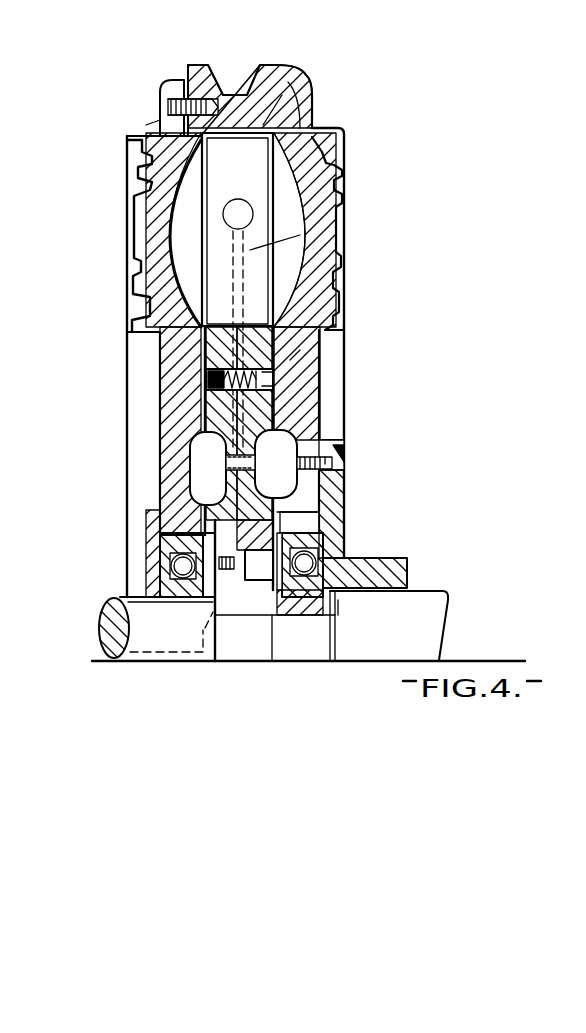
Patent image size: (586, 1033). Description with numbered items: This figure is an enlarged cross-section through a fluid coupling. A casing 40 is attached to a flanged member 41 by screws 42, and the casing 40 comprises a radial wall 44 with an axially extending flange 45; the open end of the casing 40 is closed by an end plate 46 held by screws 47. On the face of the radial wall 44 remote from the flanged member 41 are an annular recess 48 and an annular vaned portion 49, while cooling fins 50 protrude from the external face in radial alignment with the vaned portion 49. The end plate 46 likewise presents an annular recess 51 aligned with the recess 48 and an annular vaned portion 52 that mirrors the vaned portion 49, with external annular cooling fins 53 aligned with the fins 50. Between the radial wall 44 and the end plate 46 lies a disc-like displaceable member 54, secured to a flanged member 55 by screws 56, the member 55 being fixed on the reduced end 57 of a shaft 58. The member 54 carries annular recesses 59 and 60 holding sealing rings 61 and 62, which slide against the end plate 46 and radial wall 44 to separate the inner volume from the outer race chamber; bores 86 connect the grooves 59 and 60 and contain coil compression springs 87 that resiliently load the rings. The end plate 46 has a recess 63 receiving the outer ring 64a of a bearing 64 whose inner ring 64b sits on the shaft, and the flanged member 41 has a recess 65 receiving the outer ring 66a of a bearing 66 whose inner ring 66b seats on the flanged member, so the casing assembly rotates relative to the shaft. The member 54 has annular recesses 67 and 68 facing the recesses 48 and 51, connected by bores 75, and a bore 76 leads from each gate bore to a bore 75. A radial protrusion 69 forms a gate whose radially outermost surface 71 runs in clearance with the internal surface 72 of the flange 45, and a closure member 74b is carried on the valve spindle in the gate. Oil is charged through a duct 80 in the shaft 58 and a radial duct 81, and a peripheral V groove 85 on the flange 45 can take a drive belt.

The casing 40 is at (348, 398).
The flanged member 41 is at (408, 576).
The screws 42 is at (352, 473).
The radial wall 44 is at (298, 403).
The axially extending flange 45 is at (296, 95).
The end plate 46 is at (160, 136).
The screws 47 is at (165, 98).
The annular recess 48 is at (333, 463).
The annular vaned portion 49 is at (344, 205).
The cooling fins 50 is at (344, 180).
The annular recess 51 is at (196, 460).
The annular vaned portion 52 is at (188, 203).
The annular cooling fins 53 is at (128, 170).
The displaceable member 54 is at (220, 345).
The flanged member 55 is at (276, 620).
The screws 56 is at (240, 580).
The reduced end 57 is at (320, 640).
The shaft 58 is at (166, 628).
The annular recess 59 is at (262, 388).
The annular recess 60 is at (318, 356).
The sealing ring 61 is at (258, 390).
The sealing ring 62 is at (318, 373).
The recess 63 is at (175, 530).
The bearing 64 is at (172, 570).
The outer ring 64a is at (165, 554).
The inner ring 64b is at (150, 597).
The recess 65 is at (318, 538).
The bearing 66 is at (383, 578).
The outer ring 66a is at (240, 558).
The inner ring 66b is at (340, 594).
The annular recess 67 is at (284, 448).
The annular recess 68 is at (180, 510).
The radial protrusion (gate) 69 is at (215, 268).
The radially outermost surface 71 is at (300, 120).
The internal surface 72 is at (245, 108).
The closure member 74b is at (222, 215).
The bores 75 is at (238, 458).
The bore 76 is at (300, 251).
The duct 80 is at (128, 652).
The radial duct 81 is at (204, 645).
The V groove 85 is at (244, 80).
The bores 86 is at (222, 372).
The coil compression springs 87 is at (245, 386).